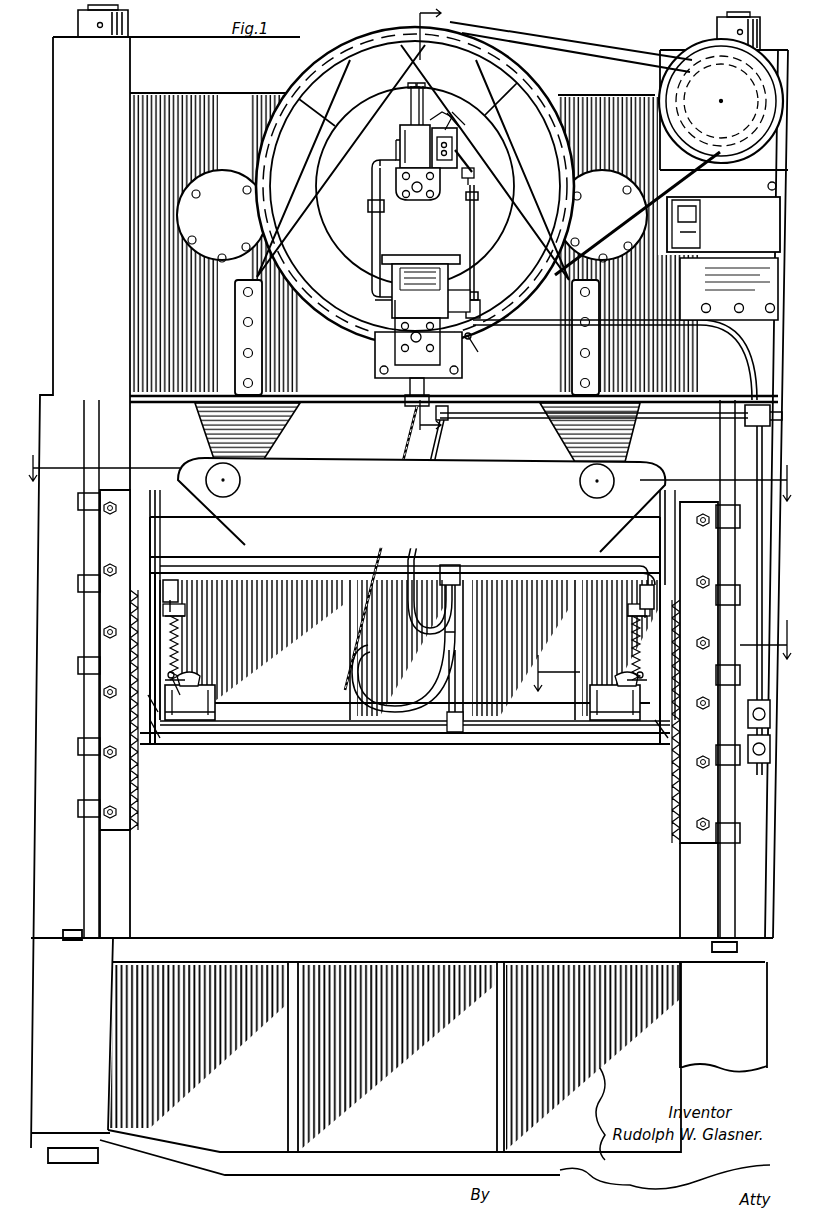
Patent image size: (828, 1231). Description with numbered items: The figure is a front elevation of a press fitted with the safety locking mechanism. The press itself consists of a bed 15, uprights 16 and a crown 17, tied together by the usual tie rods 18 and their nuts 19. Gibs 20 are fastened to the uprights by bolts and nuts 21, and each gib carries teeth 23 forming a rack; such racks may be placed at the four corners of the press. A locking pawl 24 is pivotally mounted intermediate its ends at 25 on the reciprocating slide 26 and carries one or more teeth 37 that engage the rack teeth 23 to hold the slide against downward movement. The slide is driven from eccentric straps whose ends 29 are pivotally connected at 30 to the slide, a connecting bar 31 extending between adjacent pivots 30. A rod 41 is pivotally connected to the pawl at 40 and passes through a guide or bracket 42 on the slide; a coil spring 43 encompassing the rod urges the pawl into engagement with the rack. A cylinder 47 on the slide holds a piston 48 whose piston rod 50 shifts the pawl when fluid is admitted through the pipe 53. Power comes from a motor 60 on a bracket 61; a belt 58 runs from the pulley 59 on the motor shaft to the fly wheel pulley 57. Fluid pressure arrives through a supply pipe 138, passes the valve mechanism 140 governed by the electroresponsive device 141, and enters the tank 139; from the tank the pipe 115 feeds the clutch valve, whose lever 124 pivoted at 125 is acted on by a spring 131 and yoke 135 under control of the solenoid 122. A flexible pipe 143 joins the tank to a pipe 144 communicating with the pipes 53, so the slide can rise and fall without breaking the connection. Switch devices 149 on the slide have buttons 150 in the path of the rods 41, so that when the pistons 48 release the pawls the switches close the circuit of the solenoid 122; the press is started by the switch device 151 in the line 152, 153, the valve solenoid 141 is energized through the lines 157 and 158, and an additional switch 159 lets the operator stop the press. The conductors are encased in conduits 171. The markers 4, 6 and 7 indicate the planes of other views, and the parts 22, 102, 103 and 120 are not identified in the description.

The section line 4 is at (654, 655).
The section line 6 is at (418, 226).
The section line 7 is at (410, 469).
The bed 15 is at (224, 945).
The uprights 16 is at (688, 896).
The crown 17 is at (158, 50).
The tie rods 18 is at (88, 12).
The nuts 19 is at (78, 27).
The gibs 20 is at (130, 835).
The nuts 21 is at (703, 528).
The tie rod 22 is at (108, 825).
The teeth 23 is at (140, 780).
The locking pawl 24 is at (182, 660).
The pivot 25 is at (680, 640).
The slide 26 is at (336, 736).
The ends of the eccentric straps 29 is at (255, 441).
The pivots 30 is at (240, 472).
The connecting bar 31 is at (333, 518).
The teeth 37 is at (155, 738).
The pivot connection 40 is at (190, 702).
The rod 41 is at (178, 605).
The guide or bracket 42 is at (186, 610).
The coil spring 43 is at (182, 632).
The cylinder 47 is at (240, 706).
The piston 48 is at (615, 702).
The piston rod 50 is at (197, 676).
The pipe 53 is at (500, 730).
The pulley 57 is at (545, 95).
The belt 58 is at (600, 48).
The pulley 59 is at (721, 101).
The motor 60 is at (668, 90).
The bracket 61 is at (723, 214).
The cable 102 is at (412, 415).
The valve body 103 is at (400, 140).
The pipe 115 is at (370, 212).
The bracket 120 is at (422, 200).
The solenoid 122 is at (455, 140).
The lever 124 is at (410, 95).
The pivot 125 is at (424, 95).
The spring 131 is at (462, 124).
The yoke 135 is at (450, 115).
The supply pipe 138 is at (375, 326).
The tank 139 is at (390, 357).
The valve mechanism 140 is at (392, 292).
The electroresponsive device 141 is at (465, 295).
The flexible pipe 143 is at (392, 494).
The pipe 144 is at (450, 694).
The switch devices 149 is at (166, 580).
The operating arm or button 150 is at (178, 600).
The button or switch device 151 is at (756, 763).
The line 152 is at (473, 160).
The line 153 is at (459, 180).
The line 157 is at (472, 340).
The line 158 is at (480, 300).
The additional switch 159 is at (770, 714).
The conduits 171 is at (476, 250).